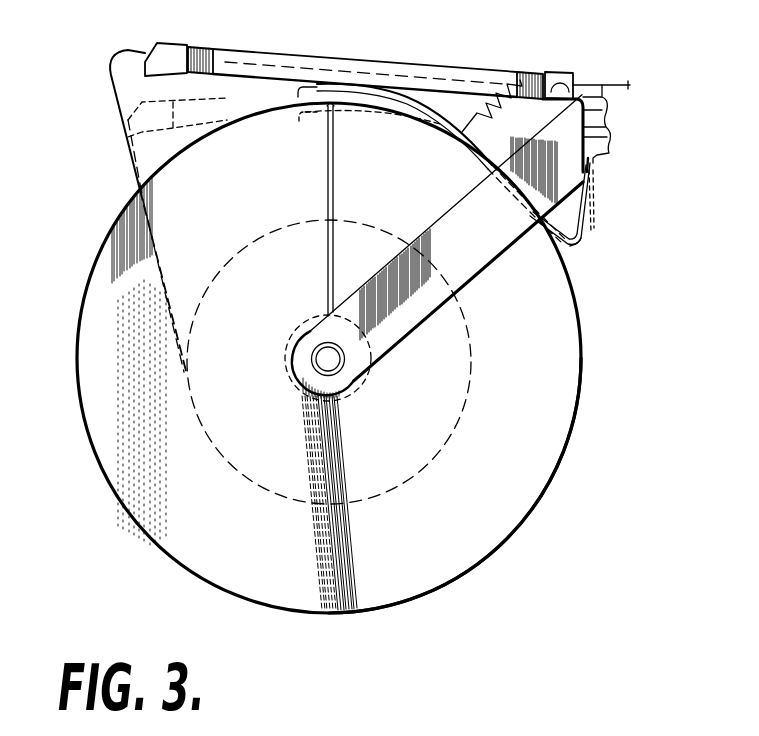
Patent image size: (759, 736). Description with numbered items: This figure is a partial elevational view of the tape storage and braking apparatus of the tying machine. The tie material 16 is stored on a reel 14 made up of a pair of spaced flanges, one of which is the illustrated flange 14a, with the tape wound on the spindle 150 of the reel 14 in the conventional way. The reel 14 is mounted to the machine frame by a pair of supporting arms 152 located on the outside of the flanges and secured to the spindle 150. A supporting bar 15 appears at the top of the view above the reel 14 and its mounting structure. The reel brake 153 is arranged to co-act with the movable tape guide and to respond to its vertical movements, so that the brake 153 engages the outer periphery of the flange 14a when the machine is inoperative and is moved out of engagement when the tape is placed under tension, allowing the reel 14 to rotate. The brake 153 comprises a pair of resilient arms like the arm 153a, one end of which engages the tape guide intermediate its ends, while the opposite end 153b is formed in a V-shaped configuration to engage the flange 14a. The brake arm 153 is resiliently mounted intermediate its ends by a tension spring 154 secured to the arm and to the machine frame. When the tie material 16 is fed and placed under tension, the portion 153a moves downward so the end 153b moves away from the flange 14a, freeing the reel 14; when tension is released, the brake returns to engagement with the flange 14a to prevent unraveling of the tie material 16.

The reel 14 is at (135, 528).
The flange 14a is at (504, 534).
The supporting bar 15 is at (312, 54).
The tie material 16 is at (113, 113).
The spindle 150 is at (286, 337).
The supporting arm 152 is at (482, 248).
The reel brake 153 is at (596, 224).
The resilient brake arm 153a is at (407, 112).
The V-shaped brake arm end 153b is at (582, 246).
The tension spring 154 is at (508, 84).